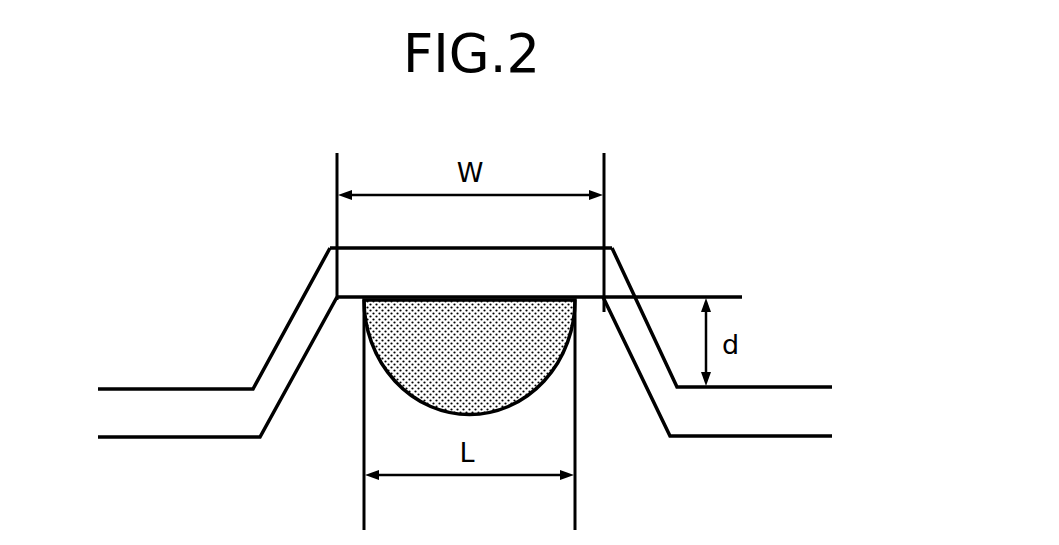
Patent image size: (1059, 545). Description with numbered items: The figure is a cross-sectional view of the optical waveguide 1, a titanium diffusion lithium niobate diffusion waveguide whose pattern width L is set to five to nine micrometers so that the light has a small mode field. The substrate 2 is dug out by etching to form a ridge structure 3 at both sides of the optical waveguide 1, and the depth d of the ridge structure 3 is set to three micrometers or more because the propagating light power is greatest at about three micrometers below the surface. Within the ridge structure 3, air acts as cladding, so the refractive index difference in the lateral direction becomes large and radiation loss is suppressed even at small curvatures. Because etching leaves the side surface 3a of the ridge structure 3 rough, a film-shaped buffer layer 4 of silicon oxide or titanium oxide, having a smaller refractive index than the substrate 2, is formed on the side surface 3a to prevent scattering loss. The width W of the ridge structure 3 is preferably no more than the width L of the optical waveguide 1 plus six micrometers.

The optical waveguide 1 is at (545, 343).
The substrate 2 is at (465, 269).
The ridge structure 3 is at (222, 341).
The side surface 3a is at (303, 295).
The buffer layer 4 is at (578, 265).